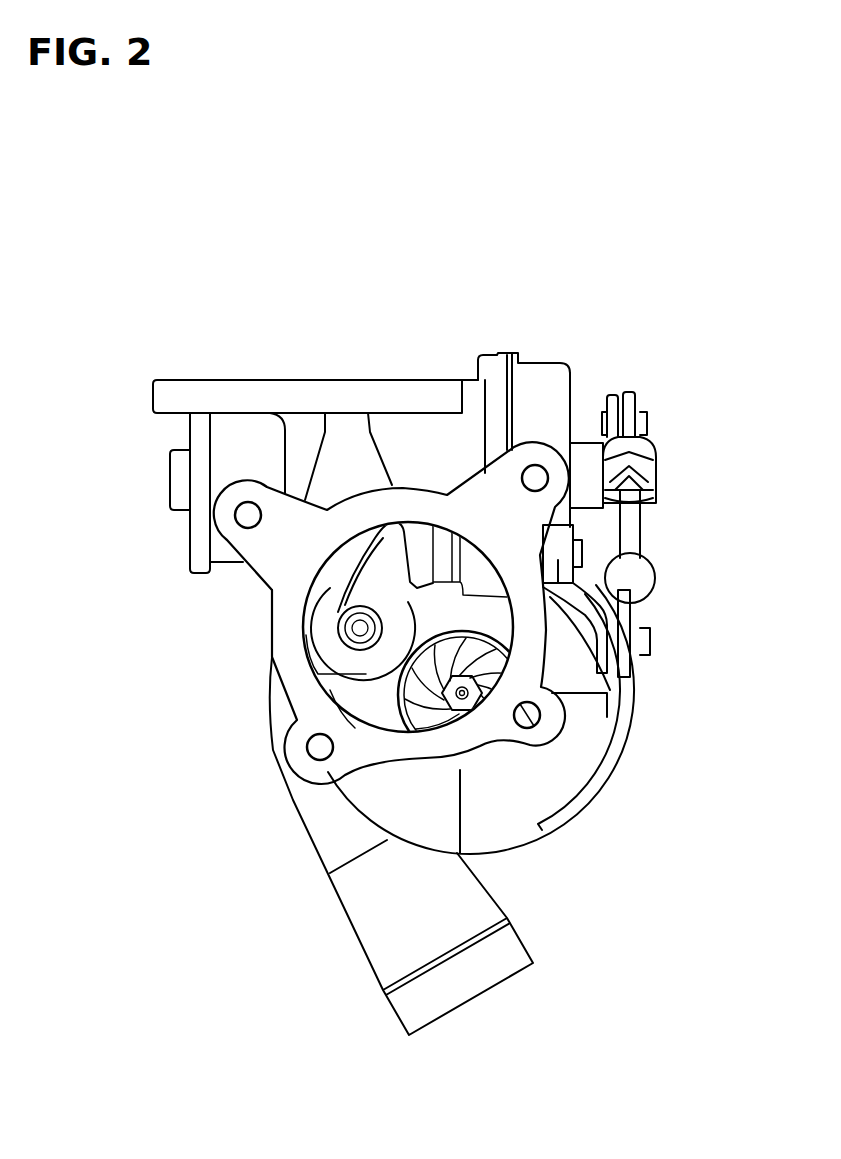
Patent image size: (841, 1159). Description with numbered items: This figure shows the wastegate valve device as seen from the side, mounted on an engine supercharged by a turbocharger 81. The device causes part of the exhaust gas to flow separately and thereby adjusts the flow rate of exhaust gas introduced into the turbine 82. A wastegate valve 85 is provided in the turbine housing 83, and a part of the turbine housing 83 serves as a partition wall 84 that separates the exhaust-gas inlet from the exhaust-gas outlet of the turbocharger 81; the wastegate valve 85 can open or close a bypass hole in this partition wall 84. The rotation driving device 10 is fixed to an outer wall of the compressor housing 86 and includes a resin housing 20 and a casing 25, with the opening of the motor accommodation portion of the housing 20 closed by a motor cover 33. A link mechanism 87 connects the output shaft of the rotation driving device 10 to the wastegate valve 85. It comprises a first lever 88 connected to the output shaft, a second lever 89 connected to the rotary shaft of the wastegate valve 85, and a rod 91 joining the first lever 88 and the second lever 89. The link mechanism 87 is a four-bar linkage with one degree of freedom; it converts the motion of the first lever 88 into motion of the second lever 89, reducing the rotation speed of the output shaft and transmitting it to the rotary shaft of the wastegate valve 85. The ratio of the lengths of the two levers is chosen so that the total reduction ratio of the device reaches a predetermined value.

The rotation driving device 10 is at (570, 366).
The housing 20 is at (488, 365).
The casing 25 is at (543, 378).
The motor cover 33 is at (196, 540).
The turbocharger 81 is at (172, 370).
The turbine 82 is at (427, 702).
The turbine housing 83 is at (537, 792).
The partition wall 84 is at (383, 683).
The wastegate valve 85 is at (318, 619).
The compressor housing 86 is at (618, 740).
The link mechanism 87 is at (658, 451).
The first lever 88 is at (612, 395).
The second lever 89 is at (593, 610).
The rod 91 is at (632, 530).